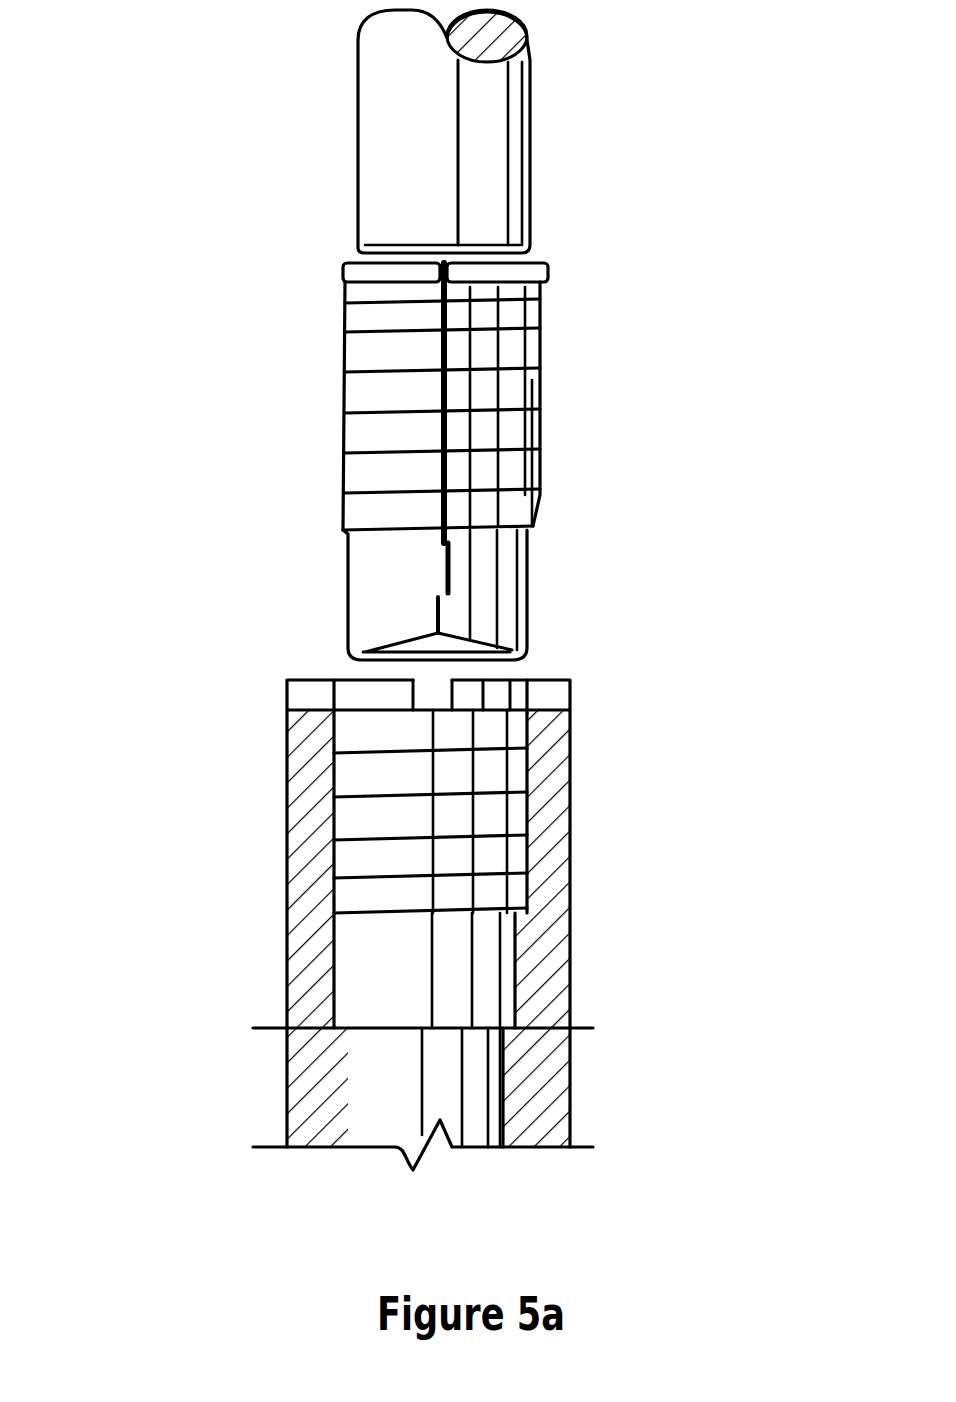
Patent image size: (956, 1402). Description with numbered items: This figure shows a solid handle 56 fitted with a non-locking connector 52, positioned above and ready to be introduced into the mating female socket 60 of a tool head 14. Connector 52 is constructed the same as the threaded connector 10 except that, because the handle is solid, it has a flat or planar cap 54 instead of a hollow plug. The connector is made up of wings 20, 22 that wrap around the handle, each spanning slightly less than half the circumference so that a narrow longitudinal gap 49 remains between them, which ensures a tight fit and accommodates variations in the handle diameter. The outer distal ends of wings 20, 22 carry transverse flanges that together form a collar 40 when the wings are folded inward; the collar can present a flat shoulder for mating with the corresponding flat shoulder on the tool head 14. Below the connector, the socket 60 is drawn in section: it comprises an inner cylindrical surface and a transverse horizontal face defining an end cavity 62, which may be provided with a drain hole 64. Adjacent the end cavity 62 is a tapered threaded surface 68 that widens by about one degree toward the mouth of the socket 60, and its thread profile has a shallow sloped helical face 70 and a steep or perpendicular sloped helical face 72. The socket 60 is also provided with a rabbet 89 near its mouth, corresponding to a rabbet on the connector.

The solid handle 56 is at (535, 88).
The collar 40 is at (337, 250).
The wing 22 is at (340, 310).
The threaded connector 10 is at (421, 437).
The flat or planar cap 54 is at (340, 668).
The longitudinal gap 49 is at (460, 341).
The wing 20 is at (548, 355).
The connector 52 is at (560, 467).
The rabbet 89 is at (545, 678).
The female socket 60 is at (560, 676).
The steep or perpendicular sloped helical face 72 is at (505, 764).
The tapered threaded surface 68 is at (500, 818).
The shallow sloped helical face 70 is at (532, 858).
The end cavity 62 is at (450, 990).
The tool head 14 is at (575, 1100).
The drain hole 64 is at (262, 1055).